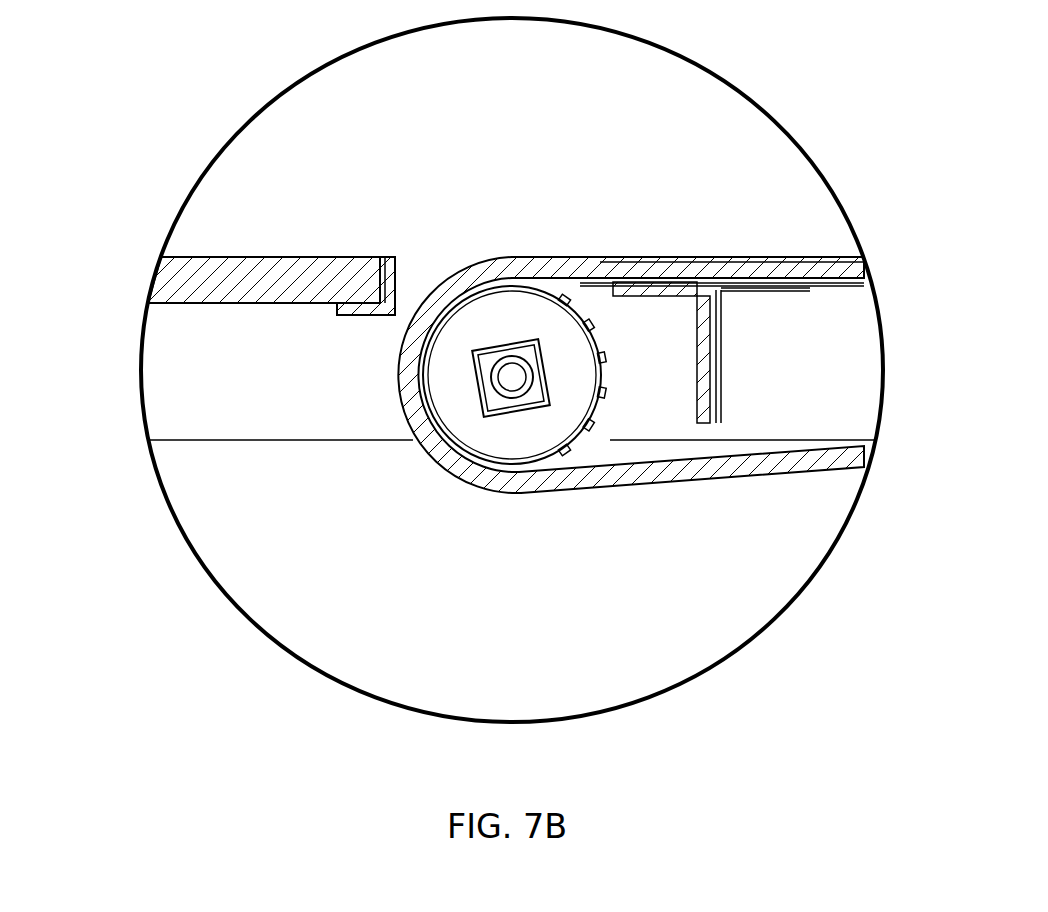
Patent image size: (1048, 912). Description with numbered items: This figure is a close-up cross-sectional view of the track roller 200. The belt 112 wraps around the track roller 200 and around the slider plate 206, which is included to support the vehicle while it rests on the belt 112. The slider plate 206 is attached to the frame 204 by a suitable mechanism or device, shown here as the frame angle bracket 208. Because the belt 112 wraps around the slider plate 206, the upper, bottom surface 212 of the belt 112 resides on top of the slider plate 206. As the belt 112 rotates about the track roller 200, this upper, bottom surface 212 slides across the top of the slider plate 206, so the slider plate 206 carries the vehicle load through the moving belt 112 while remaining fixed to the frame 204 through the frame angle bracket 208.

The belt 112 is at (672, 473).
The track roller 200 is at (453, 387).
The frame 204 is at (418, 270).
The slider plate 206 is at (838, 288).
The frame angle bracket 208 is at (697, 407).
The upper, bottom surface 212 is at (587, 300).